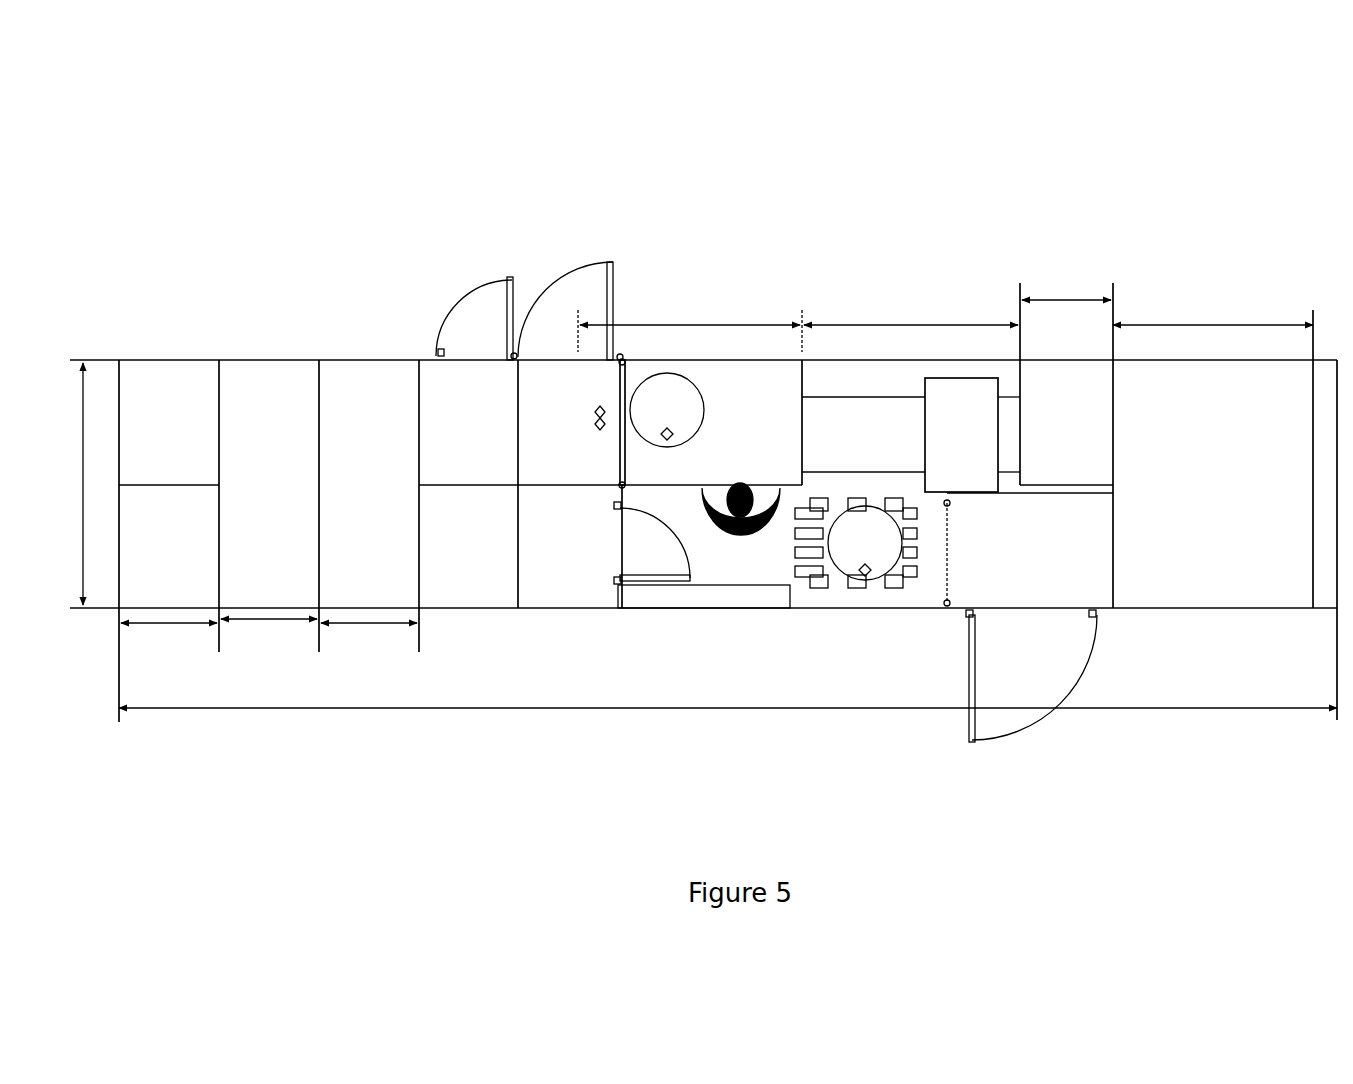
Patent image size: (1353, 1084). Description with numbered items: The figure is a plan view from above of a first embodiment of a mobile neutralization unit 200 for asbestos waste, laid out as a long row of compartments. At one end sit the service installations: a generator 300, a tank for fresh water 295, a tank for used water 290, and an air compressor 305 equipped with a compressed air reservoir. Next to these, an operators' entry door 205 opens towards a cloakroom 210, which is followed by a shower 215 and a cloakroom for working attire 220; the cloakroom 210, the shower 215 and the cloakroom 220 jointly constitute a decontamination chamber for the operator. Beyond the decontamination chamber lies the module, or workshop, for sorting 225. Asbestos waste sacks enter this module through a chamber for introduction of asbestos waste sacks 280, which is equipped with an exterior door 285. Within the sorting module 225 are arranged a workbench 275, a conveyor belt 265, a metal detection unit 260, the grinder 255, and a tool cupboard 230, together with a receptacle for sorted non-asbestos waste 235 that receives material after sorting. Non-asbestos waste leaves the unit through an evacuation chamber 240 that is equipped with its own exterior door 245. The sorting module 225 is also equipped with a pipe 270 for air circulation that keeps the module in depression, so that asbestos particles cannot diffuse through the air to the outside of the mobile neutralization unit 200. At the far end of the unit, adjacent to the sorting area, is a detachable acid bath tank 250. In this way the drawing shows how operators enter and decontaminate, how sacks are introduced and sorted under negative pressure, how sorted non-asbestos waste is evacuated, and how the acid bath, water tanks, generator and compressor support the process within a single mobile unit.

The mobile neutralization unit 200 is at (717, 198).
The operators' entry door 205 is at (484, 300).
The cloakroom 210 is at (432, 378).
The shower 215 is at (473, 600).
The cloakroom for working attire 220 is at (573, 600).
The module for sorting 225 is at (740, 570).
The tool cupboard 230 is at (651, 600).
The receptacle for sorted non-asbestos waste 235 is at (873, 555).
The evacuation chamber 240 is at (1107, 590).
The exterior door 245 is at (1005, 722).
The detachable acid bath tank 250 is at (1243, 378).
The grinder 255 is at (1043, 368).
The metal detection unit 260 is at (963, 402).
The conveyor belt 265 is at (885, 398).
The pipe for air circulation 270 is at (828, 368).
The workbench 275 is at (740, 368).
The chamber for introduction of asbestos waste sacks 280 is at (598, 400).
The exterior door 285 is at (595, 277).
The tank for used water 290 is at (350, 378).
The tank for fresh water 295 is at (260, 378).
The generator 300 is at (150, 378).
The air compressor 305 is at (150, 600).